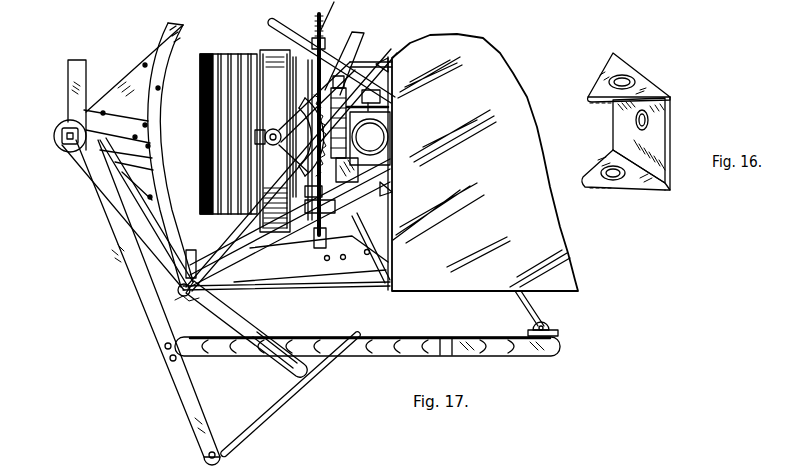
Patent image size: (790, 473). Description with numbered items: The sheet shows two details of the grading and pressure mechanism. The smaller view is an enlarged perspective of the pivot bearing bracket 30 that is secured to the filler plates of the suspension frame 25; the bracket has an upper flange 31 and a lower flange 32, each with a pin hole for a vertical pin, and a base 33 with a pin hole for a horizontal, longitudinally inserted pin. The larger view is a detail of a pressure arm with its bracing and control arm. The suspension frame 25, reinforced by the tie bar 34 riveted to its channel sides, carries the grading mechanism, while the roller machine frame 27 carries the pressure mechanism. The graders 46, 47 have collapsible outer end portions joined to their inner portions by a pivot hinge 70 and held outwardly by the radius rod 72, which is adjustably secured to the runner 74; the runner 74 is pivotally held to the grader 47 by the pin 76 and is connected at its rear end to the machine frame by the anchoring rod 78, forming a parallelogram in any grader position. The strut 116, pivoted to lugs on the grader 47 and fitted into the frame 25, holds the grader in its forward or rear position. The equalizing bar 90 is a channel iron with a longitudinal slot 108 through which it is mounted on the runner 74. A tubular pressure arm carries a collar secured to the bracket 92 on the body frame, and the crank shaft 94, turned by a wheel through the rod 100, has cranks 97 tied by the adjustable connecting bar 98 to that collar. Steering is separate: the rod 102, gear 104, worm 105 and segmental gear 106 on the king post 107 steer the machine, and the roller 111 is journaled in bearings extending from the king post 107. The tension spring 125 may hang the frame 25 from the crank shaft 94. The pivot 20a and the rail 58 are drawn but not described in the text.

In FIG. 17, the grader 46 is at (72, 88).
In FIG. 17, the pivot hinge 70 is at (180, 384).
In FIG. 17, the grader 47 is at (136, 285).
In FIG. 17, the strut 116 is at (164, 349).
In FIG. 17, the pin 76 is at (170, 362).
In FIG. 17, the tie bar 34 is at (151, 105).
In FIG. 17, the suspension frame 25 is at (185, 34).
In FIG. 17, the roller machine frame 27 is at (246, 218).
In FIG. 17, the pivot 20a is at (168, 312).
In FIG. 17, the rail 58 is at (368, 288).
In FIG. 17, the adjustable connecting bar 98 is at (284, 289).
In FIG. 17, the crank 97 is at (278, 24).
In FIG. 17, the equalizing bar 90 is at (292, 368).
In FIG. 17, the longitudinal slot 108 is at (282, 368).
In FIG. 17, the radius rod 72 is at (242, 432).
In FIG. 17, the runner 74 is at (484, 338).
In FIG. 17, the anchoring rod 78 is at (541, 320).
In FIG. 17, the segmental gear 106 is at (272, 128).
In FIG. 17, the roller 111 is at (200, 108).
In FIG. 17, the king post 107 is at (264, 140).
In FIG. 17, the bracket 92 is at (323, 38).
In FIG. 17, the crank shaft 94 is at (358, 32).
In FIG. 17, the worm 105 is at (350, 137).
In FIG. 17, the rod 102 is at (392, 110).
In FIG. 17, the gear 104 is at (393, 87).
In FIG. 17, the rod 100 is at (392, 192).
In FIG. 17, the tension spring 125 is at (432, 228).
In FIG. 16, the pivot bearing bracket 30 is at (672, 96).
In FIG. 16, the upper flange 31 is at (622, 71).
In FIG. 16, the base 33 is at (670, 126).
In FIG. 16, the lower flange 32 is at (643, 184).